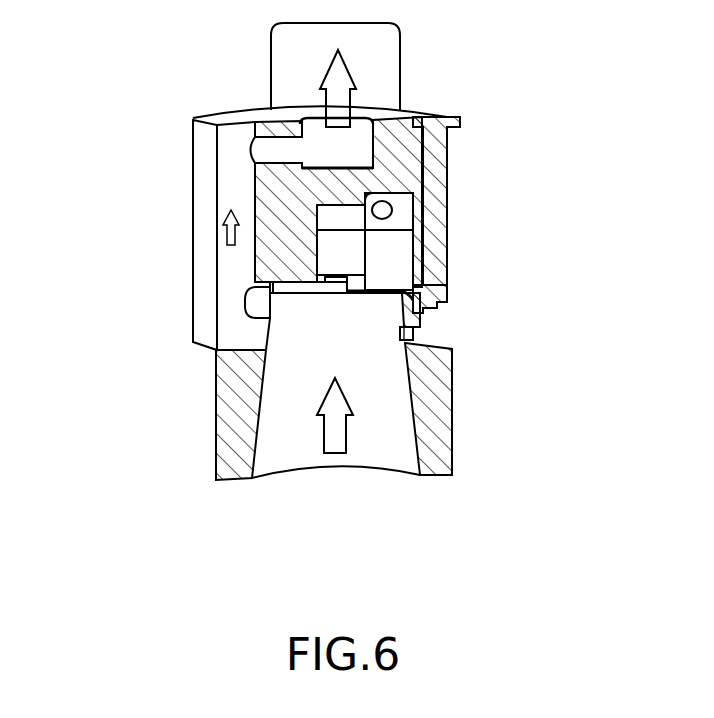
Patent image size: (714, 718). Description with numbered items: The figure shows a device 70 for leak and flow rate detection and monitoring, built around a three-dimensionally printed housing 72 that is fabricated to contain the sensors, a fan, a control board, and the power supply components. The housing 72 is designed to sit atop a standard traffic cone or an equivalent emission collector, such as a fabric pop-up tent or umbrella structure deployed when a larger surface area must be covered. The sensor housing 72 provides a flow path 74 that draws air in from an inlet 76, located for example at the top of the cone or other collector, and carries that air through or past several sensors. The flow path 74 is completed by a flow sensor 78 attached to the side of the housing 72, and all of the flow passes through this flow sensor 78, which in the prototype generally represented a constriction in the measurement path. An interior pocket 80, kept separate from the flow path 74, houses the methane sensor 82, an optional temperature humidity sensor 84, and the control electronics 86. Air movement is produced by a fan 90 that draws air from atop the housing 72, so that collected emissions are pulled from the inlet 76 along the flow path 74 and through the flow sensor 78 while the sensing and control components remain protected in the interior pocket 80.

The device 70 is at (156, 170).
The housing 72 is at (453, 392).
The flow path 74 is at (325, 440).
The inlet 76 is at (372, 487).
The flow sensor 78 is at (193, 280).
The interior pocket 80 is at (413, 193).
The methane sensor 82 is at (341, 295).
The temperature humidity sensor 84 is at (418, 335).
The control electronics 86 is at (413, 243).
The fan 90 is at (400, 66).